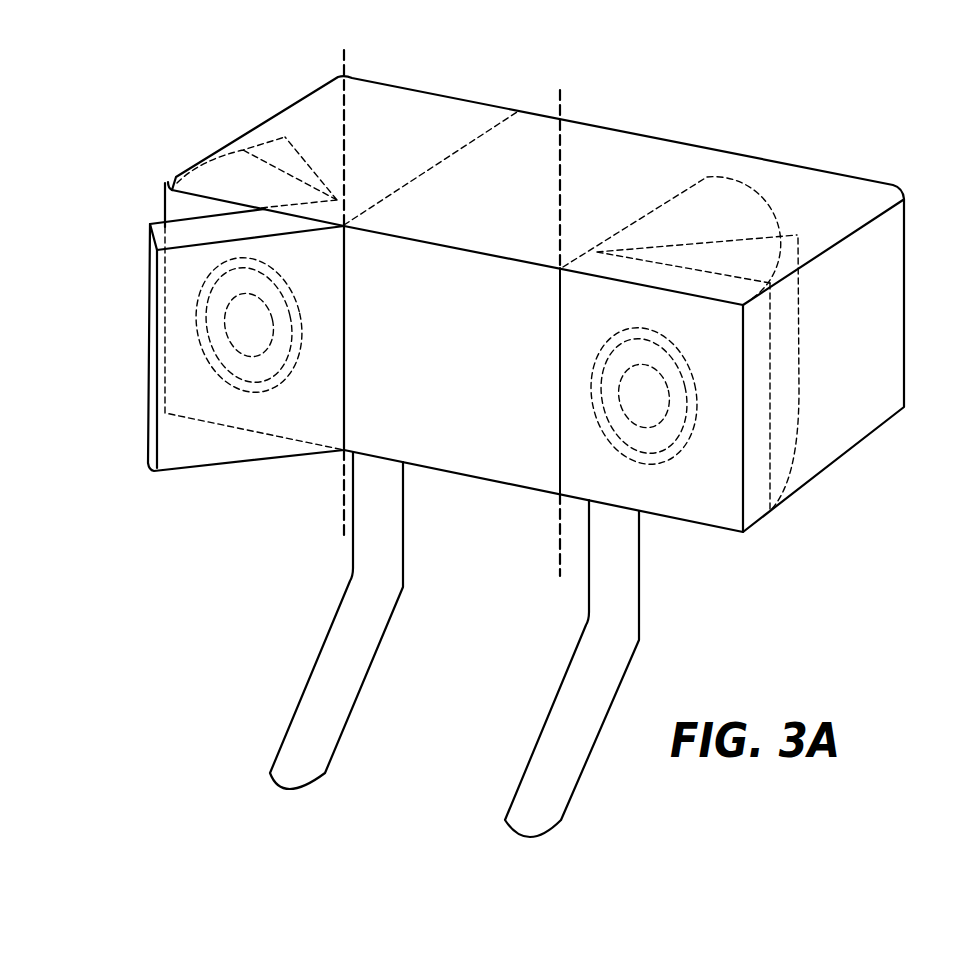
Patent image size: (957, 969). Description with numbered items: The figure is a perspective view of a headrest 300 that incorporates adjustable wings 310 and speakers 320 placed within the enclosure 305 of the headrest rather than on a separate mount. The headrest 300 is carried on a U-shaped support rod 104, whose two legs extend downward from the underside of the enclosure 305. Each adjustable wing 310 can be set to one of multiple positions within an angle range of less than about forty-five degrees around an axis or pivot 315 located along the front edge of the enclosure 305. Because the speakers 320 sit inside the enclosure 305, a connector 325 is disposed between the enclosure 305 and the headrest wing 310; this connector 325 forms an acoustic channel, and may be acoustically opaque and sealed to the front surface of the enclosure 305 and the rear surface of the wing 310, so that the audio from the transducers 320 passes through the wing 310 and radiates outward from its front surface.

The headrest 300 is at (66, 118).
The enclosure 305 is at (588, 192).
The adjustable wing 310 is at (187, 445).
The pivot 315 is at (343, 422).
The speaker 320 is at (210, 317).
The connector 325 is at (160, 207).
The U-shaped support rod 104 is at (337, 617).